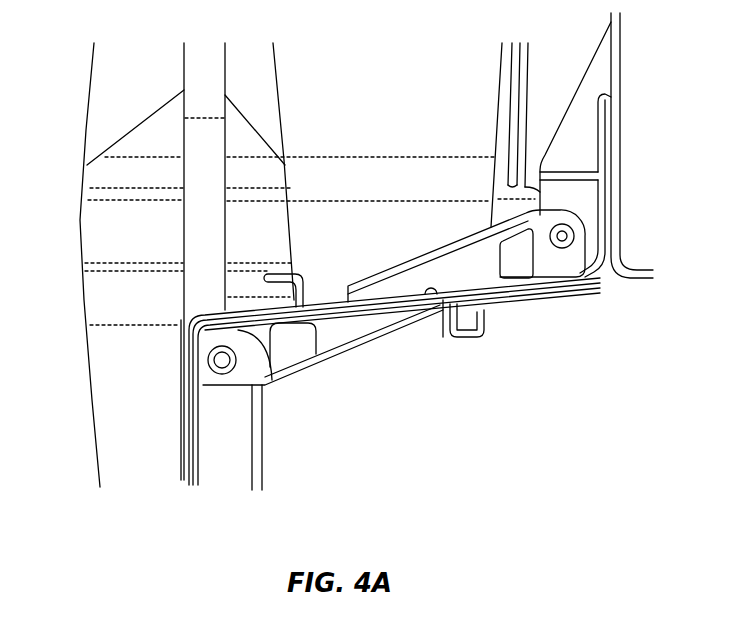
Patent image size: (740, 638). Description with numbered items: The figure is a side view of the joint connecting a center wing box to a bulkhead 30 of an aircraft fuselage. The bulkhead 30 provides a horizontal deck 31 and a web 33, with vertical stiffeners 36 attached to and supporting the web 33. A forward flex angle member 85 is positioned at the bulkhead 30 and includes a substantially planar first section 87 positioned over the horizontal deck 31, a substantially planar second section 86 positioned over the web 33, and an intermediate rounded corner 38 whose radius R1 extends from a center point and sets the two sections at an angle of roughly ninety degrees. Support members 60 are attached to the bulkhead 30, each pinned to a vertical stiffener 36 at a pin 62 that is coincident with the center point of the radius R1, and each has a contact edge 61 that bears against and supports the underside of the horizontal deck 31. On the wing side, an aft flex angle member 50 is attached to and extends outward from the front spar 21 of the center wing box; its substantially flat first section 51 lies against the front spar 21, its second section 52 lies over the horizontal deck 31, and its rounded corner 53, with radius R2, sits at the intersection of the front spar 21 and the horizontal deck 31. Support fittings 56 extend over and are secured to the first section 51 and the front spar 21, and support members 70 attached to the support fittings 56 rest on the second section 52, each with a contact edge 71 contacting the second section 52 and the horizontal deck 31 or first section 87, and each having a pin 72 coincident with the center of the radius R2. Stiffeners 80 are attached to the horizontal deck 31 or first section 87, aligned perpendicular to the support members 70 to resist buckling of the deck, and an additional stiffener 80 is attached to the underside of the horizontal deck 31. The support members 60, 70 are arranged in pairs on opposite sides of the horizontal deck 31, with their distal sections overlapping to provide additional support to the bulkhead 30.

The front spar 21 is at (623, 262).
The bulkhead 30 is at (125, 443).
The horizontal deck 31 is at (250, 311).
The web 33 is at (185, 448).
The vertical stiffener 36 is at (237, 467).
The rounded corner 38 is at (186, 317).
The aft flex angle member 50 is at (605, 190).
The first section 51 is at (618, 162).
The second section 52 is at (530, 292).
The rounded corner 53 is at (612, 257).
The support fitting 56 is at (580, 137).
The support member 60 is at (363, 330).
The contact edge 61 is at (400, 312).
The pin 62 is at (194, 342).
The support member 70 is at (453, 267).
The contact edge 71 is at (443, 313).
The pin 72 is at (577, 230).
The stiffener 80 is at (268, 270).
The forward flex angle member 85 is at (178, 311).
The second section 86 is at (302, 264).
The first section 87 is at (183, 358).
The radius R1 is at (232, 366).
The radius R2 is at (584, 244).